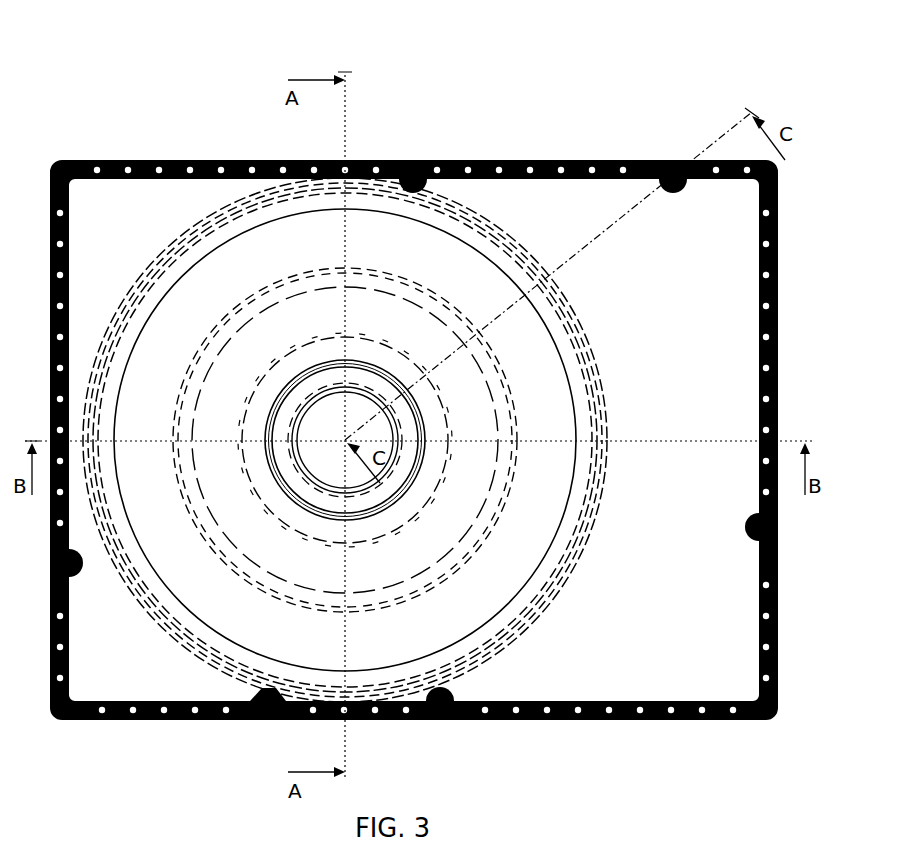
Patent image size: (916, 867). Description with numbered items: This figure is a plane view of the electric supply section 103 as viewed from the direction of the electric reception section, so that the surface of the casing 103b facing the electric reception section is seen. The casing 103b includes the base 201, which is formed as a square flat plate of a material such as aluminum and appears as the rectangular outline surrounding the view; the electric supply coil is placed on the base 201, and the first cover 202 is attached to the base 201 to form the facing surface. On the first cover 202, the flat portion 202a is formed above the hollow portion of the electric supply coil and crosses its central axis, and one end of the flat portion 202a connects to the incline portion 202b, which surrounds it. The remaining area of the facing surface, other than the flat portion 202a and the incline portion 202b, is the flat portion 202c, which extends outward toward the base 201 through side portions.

The electric supply section 103 is at (476, 384).
The casing 103b is at (533, 159).
The base 201 is at (775, 716).
The first cover 202 is at (383, 440).
The flat portion 202a is at (316, 412).
The incline portion 202b is at (131, 466).
The flat portion 202c is at (637, 328).